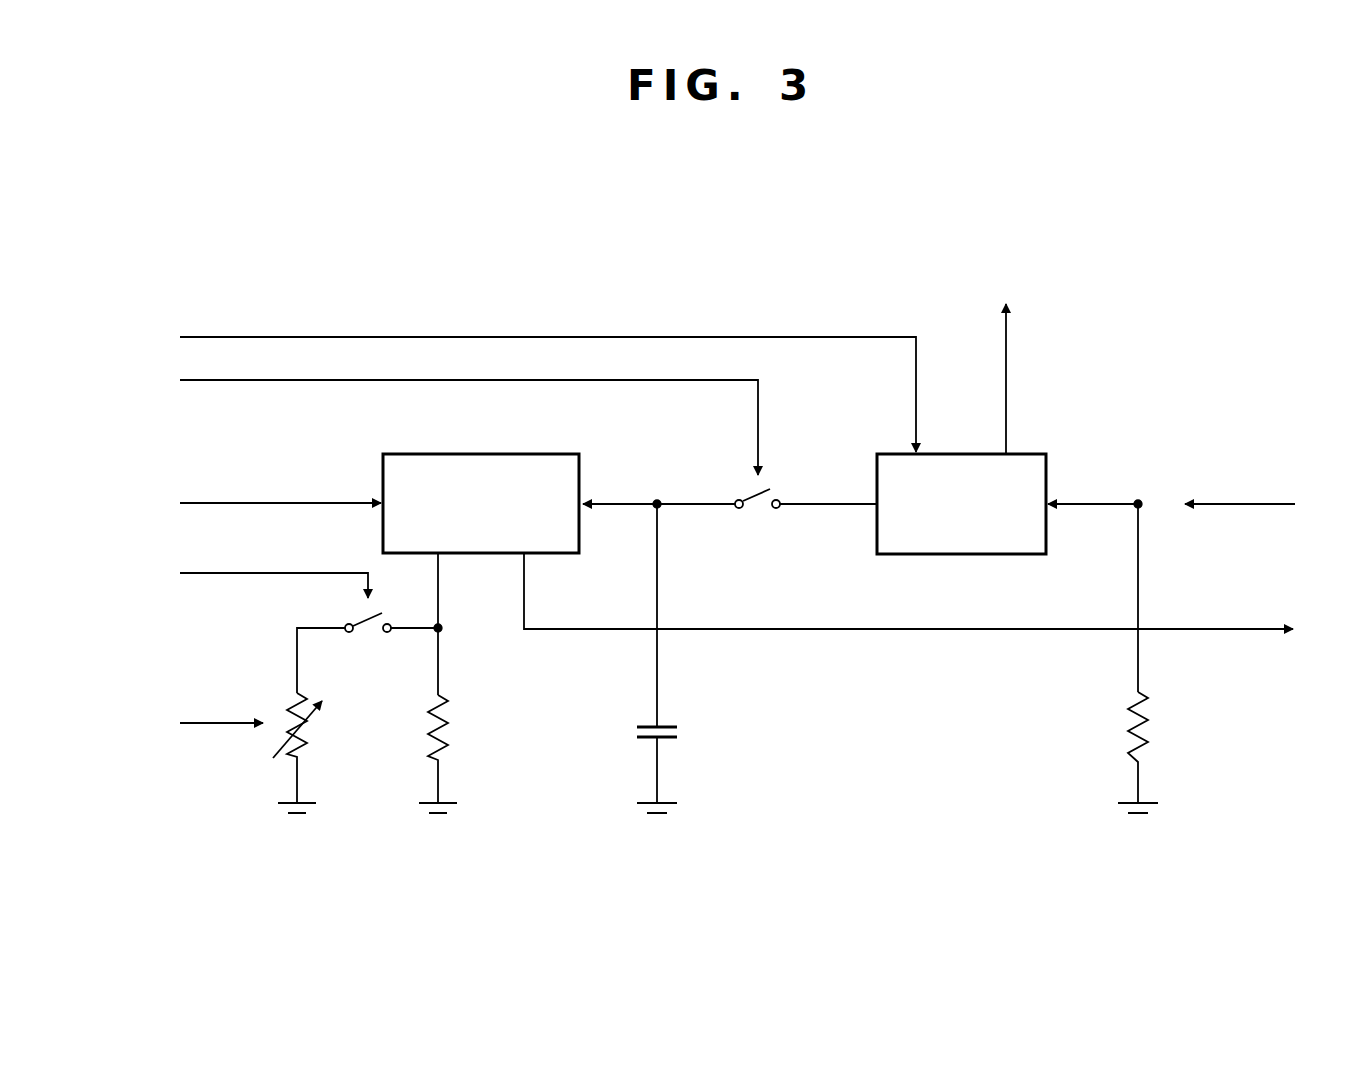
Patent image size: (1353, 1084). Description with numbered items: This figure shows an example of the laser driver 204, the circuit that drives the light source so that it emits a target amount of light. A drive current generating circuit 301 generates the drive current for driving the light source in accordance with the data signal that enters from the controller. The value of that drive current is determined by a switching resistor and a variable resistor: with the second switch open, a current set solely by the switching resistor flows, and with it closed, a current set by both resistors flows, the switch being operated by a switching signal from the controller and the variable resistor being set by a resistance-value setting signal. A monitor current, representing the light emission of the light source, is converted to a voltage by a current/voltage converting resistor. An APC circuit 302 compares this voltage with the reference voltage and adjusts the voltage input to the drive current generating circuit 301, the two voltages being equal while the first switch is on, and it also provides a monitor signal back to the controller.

The laser driver 204 is at (1136, 244).
The drive current generating circuit 301 is at (540, 454).
The APC circuit 302 is at (1013, 555).